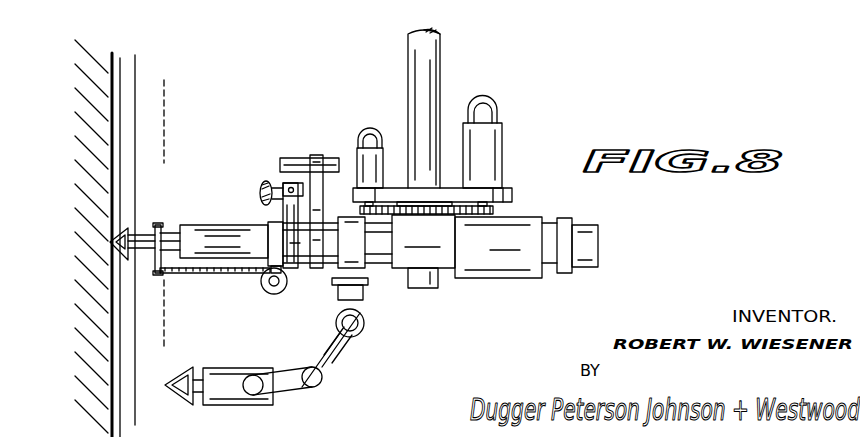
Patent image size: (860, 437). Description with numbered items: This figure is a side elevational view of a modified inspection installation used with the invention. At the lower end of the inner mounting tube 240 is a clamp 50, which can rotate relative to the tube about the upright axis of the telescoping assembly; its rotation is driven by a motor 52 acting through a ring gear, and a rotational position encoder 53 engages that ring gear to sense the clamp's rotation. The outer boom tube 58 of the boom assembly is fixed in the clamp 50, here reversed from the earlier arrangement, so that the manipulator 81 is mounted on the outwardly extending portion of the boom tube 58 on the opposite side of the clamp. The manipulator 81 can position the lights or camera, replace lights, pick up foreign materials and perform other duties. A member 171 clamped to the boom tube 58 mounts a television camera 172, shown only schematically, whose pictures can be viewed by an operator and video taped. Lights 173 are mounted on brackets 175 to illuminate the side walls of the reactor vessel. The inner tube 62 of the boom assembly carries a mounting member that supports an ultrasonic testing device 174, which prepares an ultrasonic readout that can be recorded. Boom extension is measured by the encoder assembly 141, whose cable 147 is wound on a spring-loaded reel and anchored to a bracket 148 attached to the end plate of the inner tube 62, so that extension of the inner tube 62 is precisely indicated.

The inner mounting tube 240 is at (432, 52).
The rotational position encoder 53 is at (380, 166).
The motor 52 is at (493, 147).
The outer boom tube 58 is at (598, 238).
The clamp 50 is at (447, 251).
The manipulator 81 is at (353, 372).
The inner tube 62 is at (177, 227).
The television camera 172 is at (298, 157).
The member 171 is at (324, 185).
The lights 173 is at (259, 192).
The ultrasonic testing device 174 is at (125, 227).
The cable 147 is at (243, 275).
The bracket 148 is at (157, 276).
The encoder assembly 141 is at (268, 292).
The brackets 175 is at (287, 273).